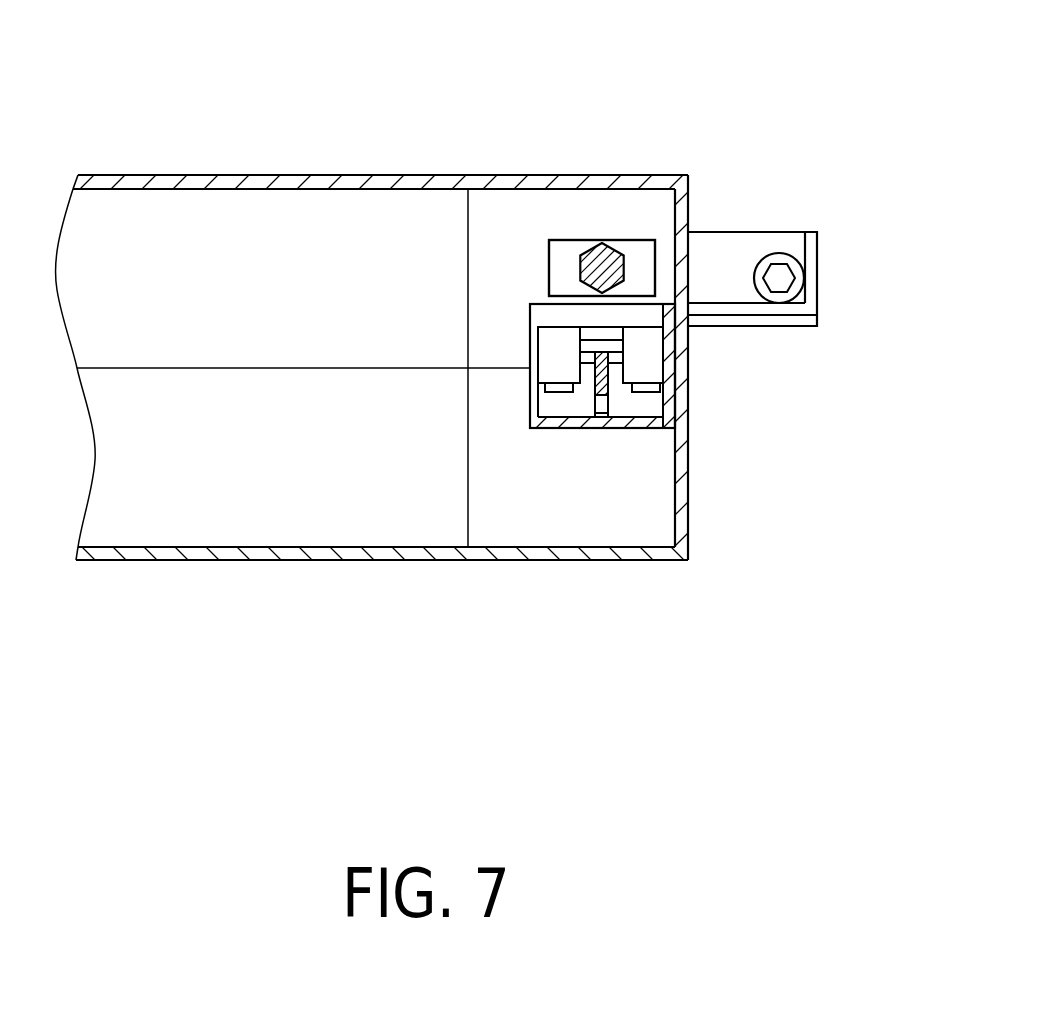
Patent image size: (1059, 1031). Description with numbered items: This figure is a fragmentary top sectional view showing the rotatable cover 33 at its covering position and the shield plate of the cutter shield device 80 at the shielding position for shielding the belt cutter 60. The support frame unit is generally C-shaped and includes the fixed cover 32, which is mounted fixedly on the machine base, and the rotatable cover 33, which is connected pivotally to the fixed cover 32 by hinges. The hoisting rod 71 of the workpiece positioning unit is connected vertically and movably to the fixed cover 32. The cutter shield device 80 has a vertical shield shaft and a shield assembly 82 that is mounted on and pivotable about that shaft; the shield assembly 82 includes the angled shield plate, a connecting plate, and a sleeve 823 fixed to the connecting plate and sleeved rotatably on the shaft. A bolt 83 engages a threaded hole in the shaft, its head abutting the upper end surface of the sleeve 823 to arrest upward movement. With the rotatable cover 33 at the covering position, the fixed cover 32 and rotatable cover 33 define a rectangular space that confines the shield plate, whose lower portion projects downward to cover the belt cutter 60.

The fixed cover 32 is at (322, 178).
The rotatable cover 33 is at (318, 553).
The hoisting rod 71 is at (594, 252).
The shield assembly 82 is at (612, 419).
The belt cutter 60 is at (596, 370).
The cutter shield device 80 is at (840, 285).
The sleeve 823 is at (766, 266).
The bolt 83 is at (781, 268).